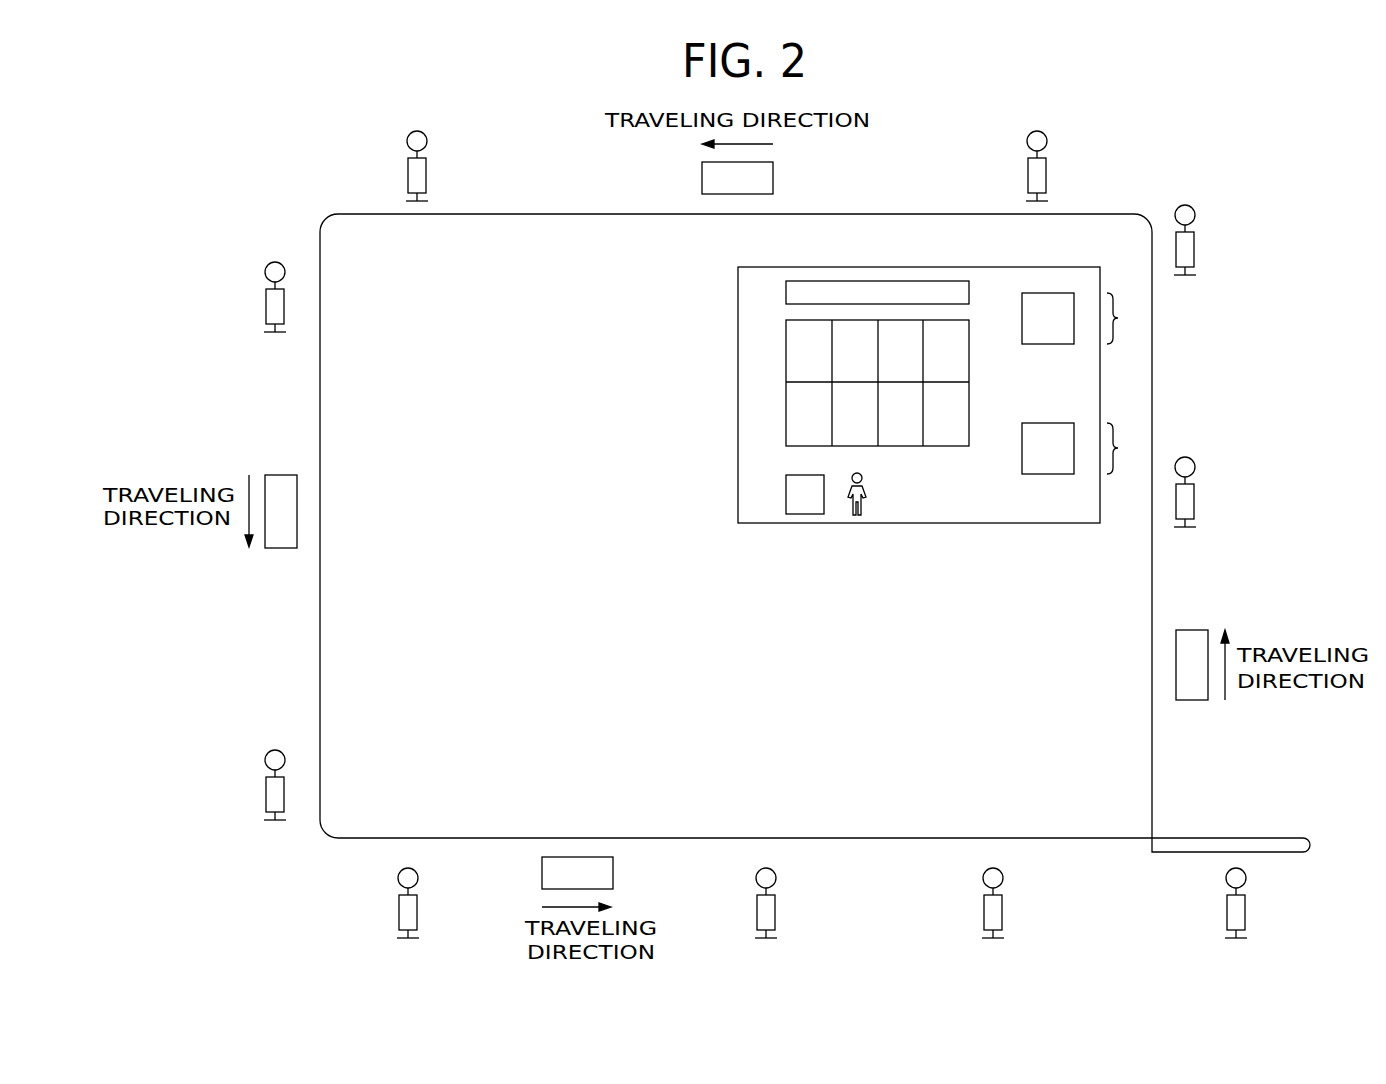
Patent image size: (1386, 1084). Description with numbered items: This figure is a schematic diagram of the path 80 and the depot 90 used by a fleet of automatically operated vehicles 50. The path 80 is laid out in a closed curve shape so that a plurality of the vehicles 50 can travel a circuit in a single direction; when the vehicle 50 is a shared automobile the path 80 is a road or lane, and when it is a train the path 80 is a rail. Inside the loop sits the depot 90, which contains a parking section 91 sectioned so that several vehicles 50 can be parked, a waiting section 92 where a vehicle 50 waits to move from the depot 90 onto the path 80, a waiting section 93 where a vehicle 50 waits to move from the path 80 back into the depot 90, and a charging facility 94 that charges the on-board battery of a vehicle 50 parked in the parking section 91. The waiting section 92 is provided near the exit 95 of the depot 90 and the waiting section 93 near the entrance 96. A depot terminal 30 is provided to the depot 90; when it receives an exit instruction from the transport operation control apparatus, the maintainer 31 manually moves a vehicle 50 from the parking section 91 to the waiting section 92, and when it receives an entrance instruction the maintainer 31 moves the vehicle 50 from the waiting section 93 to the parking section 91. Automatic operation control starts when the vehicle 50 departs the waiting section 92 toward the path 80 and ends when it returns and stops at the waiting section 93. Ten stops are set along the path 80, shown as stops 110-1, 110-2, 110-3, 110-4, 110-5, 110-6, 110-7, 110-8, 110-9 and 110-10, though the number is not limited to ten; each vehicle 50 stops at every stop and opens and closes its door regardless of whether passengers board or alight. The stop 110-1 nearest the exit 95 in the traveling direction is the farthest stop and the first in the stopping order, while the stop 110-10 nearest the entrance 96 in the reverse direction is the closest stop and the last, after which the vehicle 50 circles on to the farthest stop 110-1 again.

The depot terminal 30 is at (786, 497).
The maintainer 31 is at (868, 490).
The vehicle 50 is at (773, 178).
The path 80 is at (1152, 575).
The depot 90 is at (963, 524).
The parking section 91 is at (786, 372).
The waiting section 92 is at (1045, 344).
The waiting section 93 is at (1045, 474).
The charging facility 94 is at (786, 295).
The exit 95 is at (1126, 318).
The entrance 96 is at (1126, 448).
The stop 110-1 is at (1195, 245).
The stop 110-2 is at (1047, 170).
The stop 110-3 is at (428, 172).
The stop 110-4 is at (267, 305).
The stop 110-5 is at (267, 795).
The stop 110-6 is at (418, 910).
The stop 110-7 is at (776, 910).
The stop 110-8 is at (1003, 910).
The stop 110-9 is at (1246, 910).
The stop 110-10 is at (1195, 502).